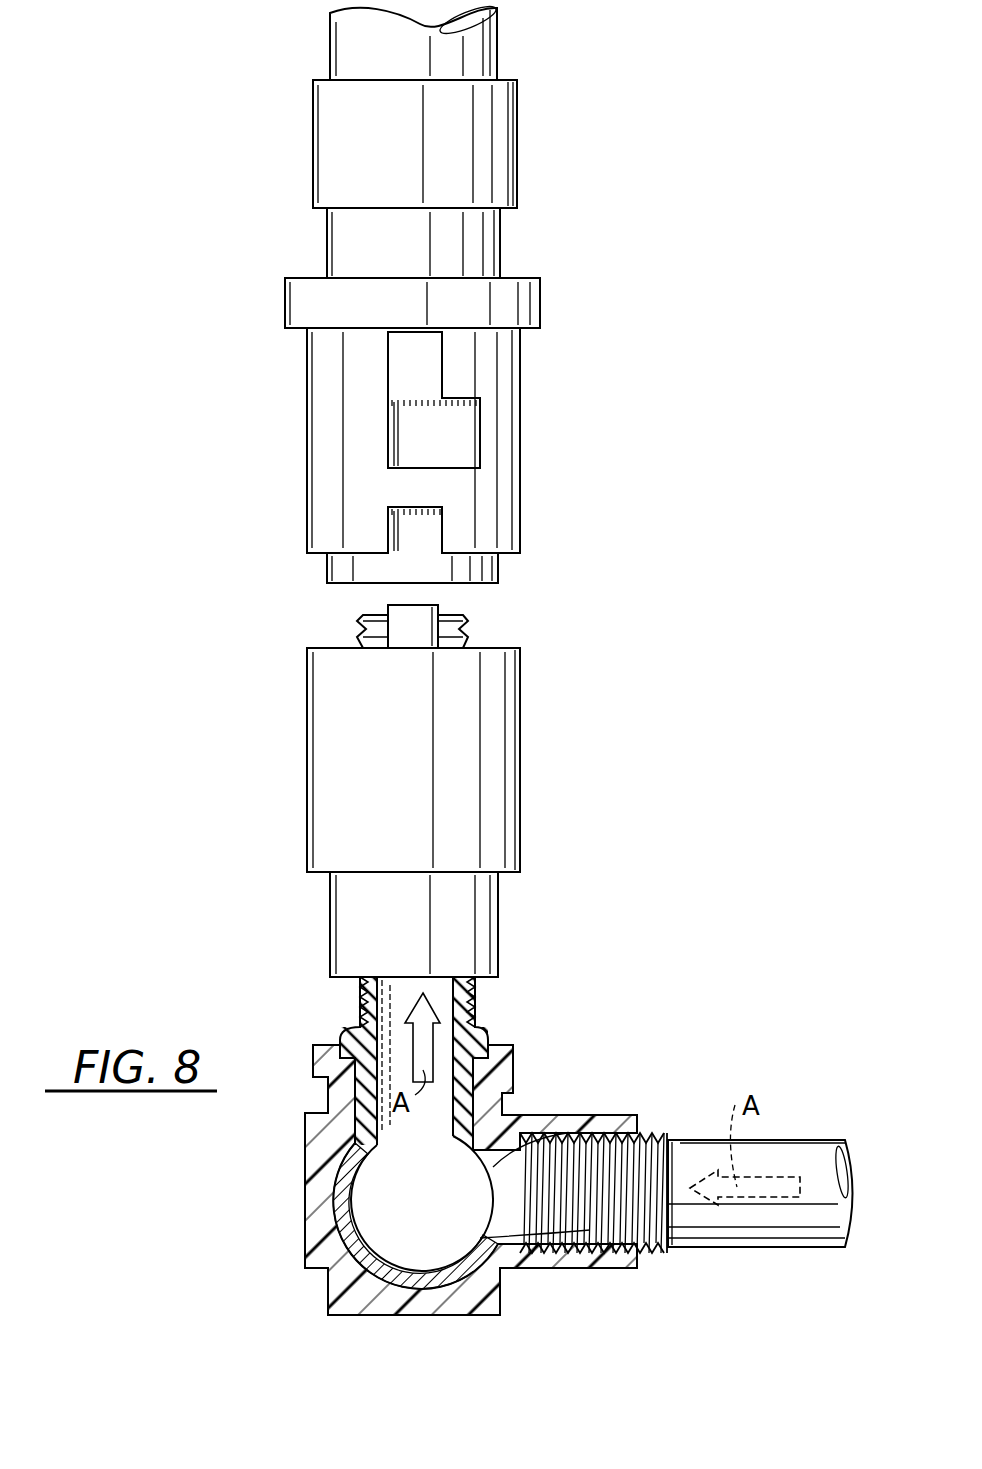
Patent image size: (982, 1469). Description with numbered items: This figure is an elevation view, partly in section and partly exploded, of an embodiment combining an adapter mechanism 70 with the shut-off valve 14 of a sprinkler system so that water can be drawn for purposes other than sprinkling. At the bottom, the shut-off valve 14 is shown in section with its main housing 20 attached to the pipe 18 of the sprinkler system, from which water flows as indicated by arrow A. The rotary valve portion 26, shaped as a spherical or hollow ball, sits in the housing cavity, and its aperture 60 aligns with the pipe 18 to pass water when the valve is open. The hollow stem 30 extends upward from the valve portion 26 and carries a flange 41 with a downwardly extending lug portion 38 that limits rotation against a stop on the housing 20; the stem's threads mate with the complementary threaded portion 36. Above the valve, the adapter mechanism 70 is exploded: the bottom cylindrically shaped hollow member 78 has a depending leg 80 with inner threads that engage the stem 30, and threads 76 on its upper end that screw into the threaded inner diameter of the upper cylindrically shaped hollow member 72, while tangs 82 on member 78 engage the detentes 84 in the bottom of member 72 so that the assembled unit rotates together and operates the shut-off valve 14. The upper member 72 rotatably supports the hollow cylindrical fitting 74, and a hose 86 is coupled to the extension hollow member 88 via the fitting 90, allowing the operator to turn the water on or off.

The shut-off valve 14 is at (300, 1188).
The pipe 18 is at (785, 1140).
The main housing 20 is at (637, 1130).
The rotary valve portion 26 is at (400, 1273).
The hollow stem 30 is at (465, 1025).
The complementary threaded portion 36 is at (473, 990).
The lug portion 38 is at (513, 1075).
The flange 41 is at (485, 1050).
The aperture 60 is at (563, 1133).
The adapter mechanism 70 is at (557, 320).
The upper cylindrically shaped hollow member 72 is at (520, 410).
The hollow cylindrical fitting 74 is at (498, 578).
The threads 76 is at (467, 637).
The bottom cylindrically shaped hollow member 78 is at (518, 807).
The depending leg 80 is at (500, 928).
The tangs 82 is at (403, 620).
The detentes 84 is at (437, 529).
The hose 86 is at (500, 58).
The extension hollow member 88 is at (500, 257).
The fitting 90 is at (518, 167).